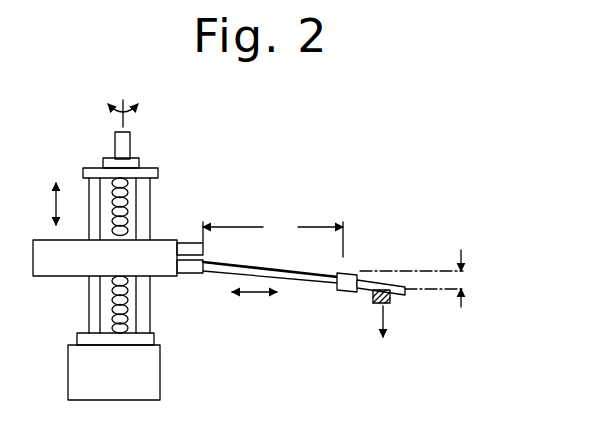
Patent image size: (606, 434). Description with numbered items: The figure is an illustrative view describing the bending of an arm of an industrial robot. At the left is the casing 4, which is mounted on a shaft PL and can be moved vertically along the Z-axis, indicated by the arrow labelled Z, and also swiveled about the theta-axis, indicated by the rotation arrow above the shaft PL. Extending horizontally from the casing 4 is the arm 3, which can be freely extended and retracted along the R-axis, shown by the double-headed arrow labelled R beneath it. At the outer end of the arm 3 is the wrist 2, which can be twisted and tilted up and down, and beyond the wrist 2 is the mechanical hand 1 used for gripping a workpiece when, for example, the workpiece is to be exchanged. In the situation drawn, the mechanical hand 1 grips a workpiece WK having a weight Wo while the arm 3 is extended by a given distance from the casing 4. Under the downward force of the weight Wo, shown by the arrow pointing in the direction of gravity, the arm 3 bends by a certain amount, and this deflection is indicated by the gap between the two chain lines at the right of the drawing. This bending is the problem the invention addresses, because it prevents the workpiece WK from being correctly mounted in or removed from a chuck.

The mechanical hand 1 is at (398, 280).
The wrist 2 is at (358, 272).
The arm 3 is at (307, 281).
The casing 4 is at (43, 272).
The shaft PL is at (132, 189).
The workpiece WK is at (373, 302).
The workpiece weight Wo is at (390, 336).
The R-axis R is at (254, 304).
The Z-axis Z is at (65, 204).